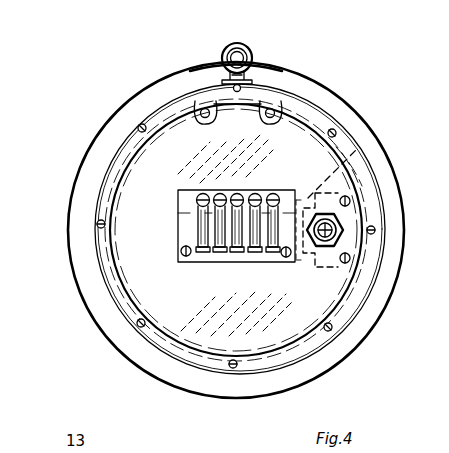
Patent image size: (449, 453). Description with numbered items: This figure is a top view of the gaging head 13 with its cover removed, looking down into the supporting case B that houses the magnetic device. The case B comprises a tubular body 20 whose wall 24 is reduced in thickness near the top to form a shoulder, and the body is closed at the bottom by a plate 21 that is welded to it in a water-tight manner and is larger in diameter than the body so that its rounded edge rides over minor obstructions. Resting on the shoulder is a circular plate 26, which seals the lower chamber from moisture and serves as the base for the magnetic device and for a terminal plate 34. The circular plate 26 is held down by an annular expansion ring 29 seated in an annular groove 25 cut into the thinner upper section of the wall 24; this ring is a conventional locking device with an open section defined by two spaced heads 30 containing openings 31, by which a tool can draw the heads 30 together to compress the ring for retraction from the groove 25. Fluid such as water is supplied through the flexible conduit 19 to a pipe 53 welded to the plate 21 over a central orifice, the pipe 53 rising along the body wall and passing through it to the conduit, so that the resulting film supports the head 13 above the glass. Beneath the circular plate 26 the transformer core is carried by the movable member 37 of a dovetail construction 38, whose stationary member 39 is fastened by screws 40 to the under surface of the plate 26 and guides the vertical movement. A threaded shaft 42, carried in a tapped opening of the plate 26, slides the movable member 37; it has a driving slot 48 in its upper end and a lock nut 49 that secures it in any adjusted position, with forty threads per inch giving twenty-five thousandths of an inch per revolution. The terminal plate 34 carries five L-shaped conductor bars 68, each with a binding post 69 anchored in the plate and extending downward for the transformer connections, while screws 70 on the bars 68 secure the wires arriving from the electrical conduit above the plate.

The gaging head 13 is at (131, 77).
The supporting case B is at (303, 93).
The tubular body 20 is at (183, 93).
The plate 21 is at (323, 104).
The annular groove 25 is at (122, 293).
The stationary member 39 is at (349, 161).
The annular expansion ring 29 is at (128, 296).
The wall 24 is at (322, 332).
The flexible conduit 19 is at (252, 56).
The pipe 53 is at (248, 80).
The spaced heads 30 is at (257, 115).
The openings 31 is at (199, 121).
The circular plate 26 is at (158, 157).
The terminal plate 34 is at (200, 223).
The binding posts 69 is at (199, 203).
The L-shaped conductor bars 68 is at (220, 229).
The screws 70 is at (238, 253).
The movable member 37 is at (334, 185).
The dovetail construction 38 is at (360, 146).
The threaded shaft 42 is at (338, 221).
The driving slot 48 is at (344, 232).
The lock nut 49 is at (340, 240).
The screws 40 is at (348, 201).